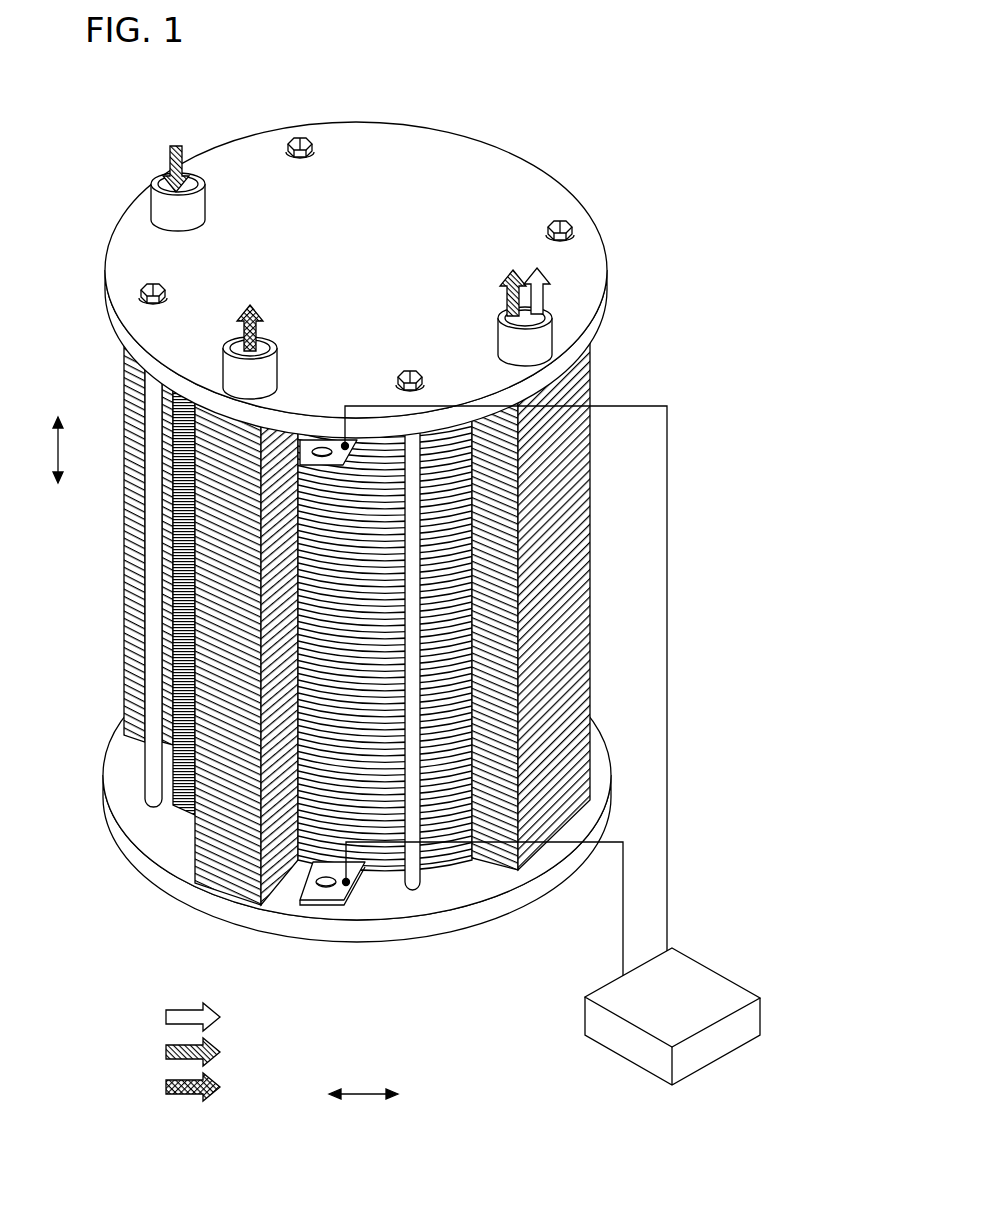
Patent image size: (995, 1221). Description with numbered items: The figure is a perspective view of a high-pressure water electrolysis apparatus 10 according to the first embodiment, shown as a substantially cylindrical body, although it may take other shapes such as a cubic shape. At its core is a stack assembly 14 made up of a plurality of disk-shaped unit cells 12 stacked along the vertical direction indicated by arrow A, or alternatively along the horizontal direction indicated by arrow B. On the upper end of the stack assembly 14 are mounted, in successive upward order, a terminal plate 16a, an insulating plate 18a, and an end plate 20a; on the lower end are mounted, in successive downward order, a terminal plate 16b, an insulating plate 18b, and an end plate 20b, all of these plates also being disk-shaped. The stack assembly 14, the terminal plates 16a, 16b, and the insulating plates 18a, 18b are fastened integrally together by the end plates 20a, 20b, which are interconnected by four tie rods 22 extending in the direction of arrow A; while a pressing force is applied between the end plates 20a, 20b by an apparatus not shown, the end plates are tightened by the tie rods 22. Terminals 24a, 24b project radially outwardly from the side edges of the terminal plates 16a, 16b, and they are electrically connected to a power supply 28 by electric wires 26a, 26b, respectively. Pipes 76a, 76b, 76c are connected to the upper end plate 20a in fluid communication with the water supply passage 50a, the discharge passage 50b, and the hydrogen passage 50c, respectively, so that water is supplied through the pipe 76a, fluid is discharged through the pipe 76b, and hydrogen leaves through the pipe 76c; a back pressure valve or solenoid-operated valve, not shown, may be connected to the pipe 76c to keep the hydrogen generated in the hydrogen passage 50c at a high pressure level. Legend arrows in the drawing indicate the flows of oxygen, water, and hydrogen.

The high-pressure water electrolysis apparatus 10 is at (172, 86).
The unit cell 12 is at (168, 560).
The stack assembly 14 is at (298, 602).
The terminal plate 16a is at (655, 314).
The terminal plate 16b is at (457, 849).
The insulating plate 18a is at (563, 282).
The insulating plate 18b is at (447, 863).
The end plate 20a is at (538, 171).
The end plate 20b is at (592, 723).
The tie rod 22 is at (413, 893).
The terminal 24a is at (306, 438).
The terminal 24b is at (332, 903).
The electric wire 26a is at (667, 907).
The electric wire 26b is at (623, 945).
The power supply 28 is at (722, 992).
The water supply passage 50a is at (206, 200).
The discharge passage 50b is at (510, 345).
The hydrogen passage 50c is at (233, 364).
The pipe 76a is at (221, 188).
The pipe 76b is at (489, 322).
The pipe 76c is at (230, 338).